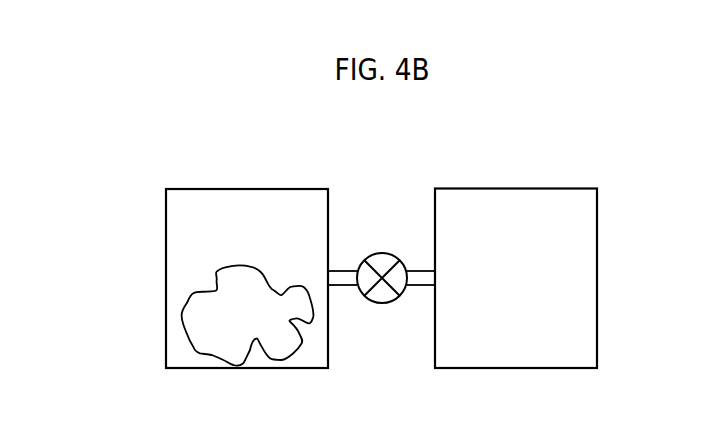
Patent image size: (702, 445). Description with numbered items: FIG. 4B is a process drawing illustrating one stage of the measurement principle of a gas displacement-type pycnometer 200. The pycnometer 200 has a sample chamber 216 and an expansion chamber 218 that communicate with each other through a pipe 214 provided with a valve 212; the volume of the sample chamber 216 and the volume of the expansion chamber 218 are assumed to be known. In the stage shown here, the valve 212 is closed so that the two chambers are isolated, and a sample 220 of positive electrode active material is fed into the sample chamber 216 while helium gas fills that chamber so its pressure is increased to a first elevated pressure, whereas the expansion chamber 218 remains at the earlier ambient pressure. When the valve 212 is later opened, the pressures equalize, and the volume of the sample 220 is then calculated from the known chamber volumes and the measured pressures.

The gas displacement-type pycnometer 200 is at (127, 197).
The valve 212 is at (367, 252).
The pipe 214 is at (415, 267).
The sample chamber 216 is at (246, 189).
The expansion chamber 218 is at (512, 188).
The sample 220 is at (290, 355).